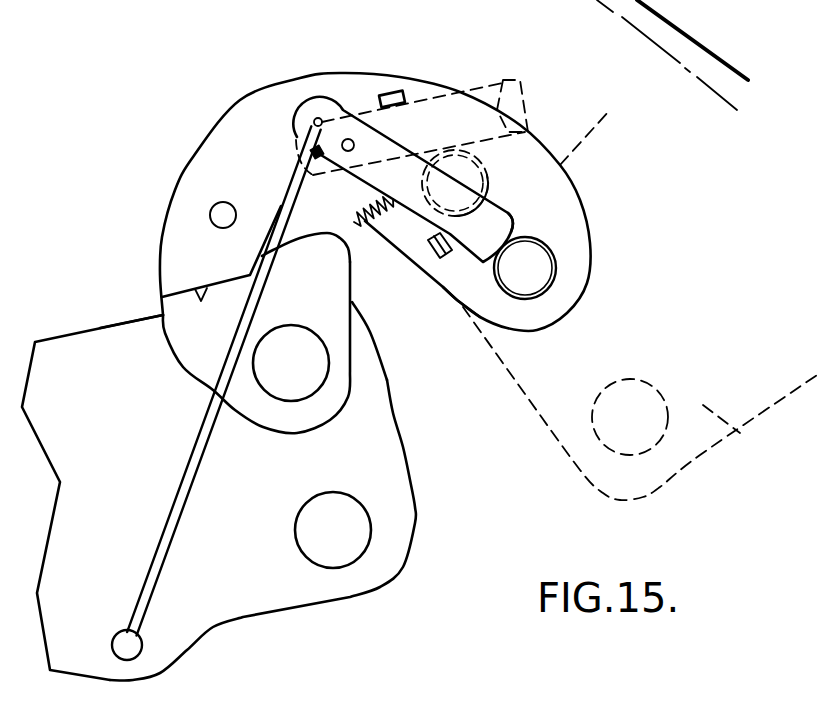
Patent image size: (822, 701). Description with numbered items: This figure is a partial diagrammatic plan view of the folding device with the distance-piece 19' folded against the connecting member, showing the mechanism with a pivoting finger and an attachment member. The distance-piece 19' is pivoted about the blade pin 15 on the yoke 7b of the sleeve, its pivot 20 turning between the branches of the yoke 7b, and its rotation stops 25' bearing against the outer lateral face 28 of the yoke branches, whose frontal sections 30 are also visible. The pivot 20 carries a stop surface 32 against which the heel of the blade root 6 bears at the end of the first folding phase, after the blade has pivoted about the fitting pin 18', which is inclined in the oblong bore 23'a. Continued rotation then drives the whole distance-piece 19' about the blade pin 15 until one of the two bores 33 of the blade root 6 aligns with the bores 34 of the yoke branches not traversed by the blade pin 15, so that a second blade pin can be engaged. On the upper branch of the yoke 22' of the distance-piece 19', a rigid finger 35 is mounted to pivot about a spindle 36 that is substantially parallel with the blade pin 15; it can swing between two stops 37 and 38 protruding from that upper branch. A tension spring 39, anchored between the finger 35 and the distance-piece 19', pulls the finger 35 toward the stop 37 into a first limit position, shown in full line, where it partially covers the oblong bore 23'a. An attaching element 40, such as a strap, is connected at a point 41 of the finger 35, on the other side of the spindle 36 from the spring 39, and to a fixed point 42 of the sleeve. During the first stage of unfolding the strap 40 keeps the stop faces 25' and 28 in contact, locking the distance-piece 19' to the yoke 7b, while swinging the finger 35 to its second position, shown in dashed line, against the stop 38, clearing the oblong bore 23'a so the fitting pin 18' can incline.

The blade root 6 is at (740, 433).
The yoke 7b is at (115, 367).
The blade pin 15 is at (293, 364).
The fitting pin 18' is at (538, 192).
The distance-piece 19' is at (558, 305).
The pivot 20 is at (315, 274).
The yoke of the distance-piece 22' is at (346, 347).
The oblong bore 23'a is at (580, 201).
The rotation stops 25' is at (355, 202).
The outer lateral face 28 is at (147, 317).
The frontal sections 30 is at (403, 452).
The stop surface 32 is at (353, 378).
The bores of the blade root 33 is at (627, 417).
The bores of the yoke branches 34 is at (350, 522).
The rigid finger 35 is at (417, 177).
The spindle 36 is at (349, 138).
The stop 37 is at (438, 258).
The stop 38 is at (395, 97).
The tension spring 39 is at (380, 240).
The attaching element 40 is at (157, 557).
The attachment point 41 is at (316, 118).
The fixed point 42 is at (130, 643).